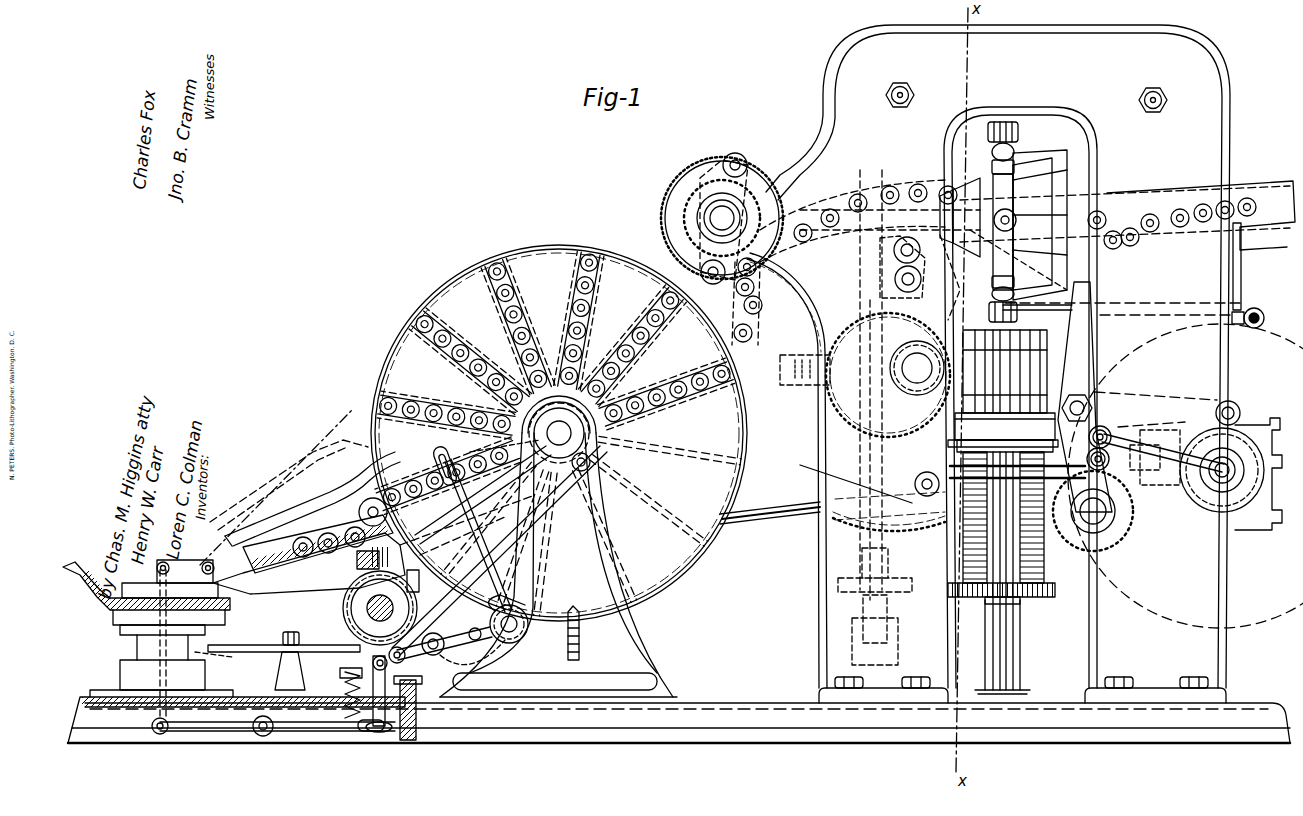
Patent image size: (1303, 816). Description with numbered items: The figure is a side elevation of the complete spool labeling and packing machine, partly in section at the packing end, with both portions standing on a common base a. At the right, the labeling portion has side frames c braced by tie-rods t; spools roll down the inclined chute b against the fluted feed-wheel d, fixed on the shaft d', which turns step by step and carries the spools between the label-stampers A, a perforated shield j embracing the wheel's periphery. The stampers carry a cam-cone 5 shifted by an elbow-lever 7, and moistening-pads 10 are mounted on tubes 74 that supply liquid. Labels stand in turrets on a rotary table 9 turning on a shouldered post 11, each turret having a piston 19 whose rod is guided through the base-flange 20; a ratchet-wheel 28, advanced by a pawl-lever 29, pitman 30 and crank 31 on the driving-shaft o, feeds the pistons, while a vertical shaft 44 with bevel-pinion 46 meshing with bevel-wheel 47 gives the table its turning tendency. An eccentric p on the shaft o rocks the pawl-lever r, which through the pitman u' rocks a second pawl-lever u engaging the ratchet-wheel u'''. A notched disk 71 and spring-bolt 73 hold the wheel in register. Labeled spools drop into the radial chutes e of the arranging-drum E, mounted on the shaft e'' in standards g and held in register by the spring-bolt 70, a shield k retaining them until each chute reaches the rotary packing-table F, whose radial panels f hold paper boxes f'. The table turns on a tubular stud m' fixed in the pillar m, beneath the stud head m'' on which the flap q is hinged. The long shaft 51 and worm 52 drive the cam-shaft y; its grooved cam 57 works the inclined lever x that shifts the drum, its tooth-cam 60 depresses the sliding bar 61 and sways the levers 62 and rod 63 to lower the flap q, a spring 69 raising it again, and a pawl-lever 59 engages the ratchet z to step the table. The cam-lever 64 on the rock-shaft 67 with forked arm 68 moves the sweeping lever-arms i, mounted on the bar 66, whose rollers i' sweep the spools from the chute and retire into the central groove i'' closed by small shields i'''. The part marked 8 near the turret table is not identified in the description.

The side frames c is at (988, 364).
The tie-rods t is at (1034, 97).
The base a is at (679, 514).
The sliding bar 61 is at (414, 703).
The arranging-drum E is at (559, 433).
The shield k is at (542, 426).
The inclined or radial chutes e is at (558, 433).
The drum shaft e'' is at (559, 433).
The small shields i''' is at (589, 408).
The standards g is at (558, 546).
The inclined lever x is at (499, 550).
The lever-arms i is at (483, 445).
The short rollers i' is at (453, 466).
The circular groove i'' is at (505, 452).
The bar 66 is at (530, 628).
The sliding spring-bolt 70 is at (582, 628).
The second lever-arm 68 is at (444, 639).
The rock-shaft 67 is at (470, 653).
The cam-lever 64 is at (408, 655).
The cylindrical grooved cam 57 is at (357, 645).
The cam-shaft y is at (345, 607).
The worm 52 is at (369, 569).
The rotary table F is at (309, 563).
The paper boxes f' is at (318, 544).
The radial panels or recesses f is at (304, 539).
The hinged flap or lid q is at (300, 487).
The head of stud m'' is at (146, 585).
The ratchet z is at (228, 618).
The short pillar m is at (150, 645).
The rod 63 is at (161, 678).
The tubular stud m' is at (214, 655).
The pawl-lever 59 is at (284, 660).
The inclined tooth-cam 60 is at (368, 660).
The spring 69 is at (340, 686).
The levers 62 is at (273, 722).
The long shaft 51 is at (770, 524).
The second pawl-lever u is at (898, 218).
The ratchet-wheel u''' is at (697, 218).
The pitman u' is at (754, 226).
The shield j is at (852, 259).
The bevel-wheel 47 is at (871, 383).
The bevel-pinion 46 is at (895, 267).
The feed-wheel d is at (785, 307).
The sliding spring-bolt 73 is at (805, 359).
The label-stampers A is at (1013, 222).
The cam-cone 5 is at (946, 293).
The moistening-pads 10 is at (1037, 299).
The disk 71 is at (957, 277).
The shaft d' is at (917, 368).
The cylinder 8 is at (1005, 371).
The rotary table 9 is at (1003, 432).
The piston 19 is at (1017, 517).
The shouldered post 11 is at (1002, 573).
The base-flange 20 is at (1012, 595).
The vertical shaft 44 is at (872, 564).
The pawl-lever r is at (924, 473).
The elbow-lever 7 is at (1180, 455).
The pawl-lever 29 is at (1109, 428).
The pitman 30 is at (1133, 456).
The crank 31 is at (1179, 453).
The ratchet-wheel 28 is at (1106, 511).
The main or driving shaft o is at (1222, 456).
The eccentric p is at (1258, 469).
The inclined chute b is at (1127, 245).
The tubes 74 is at (1145, 315).